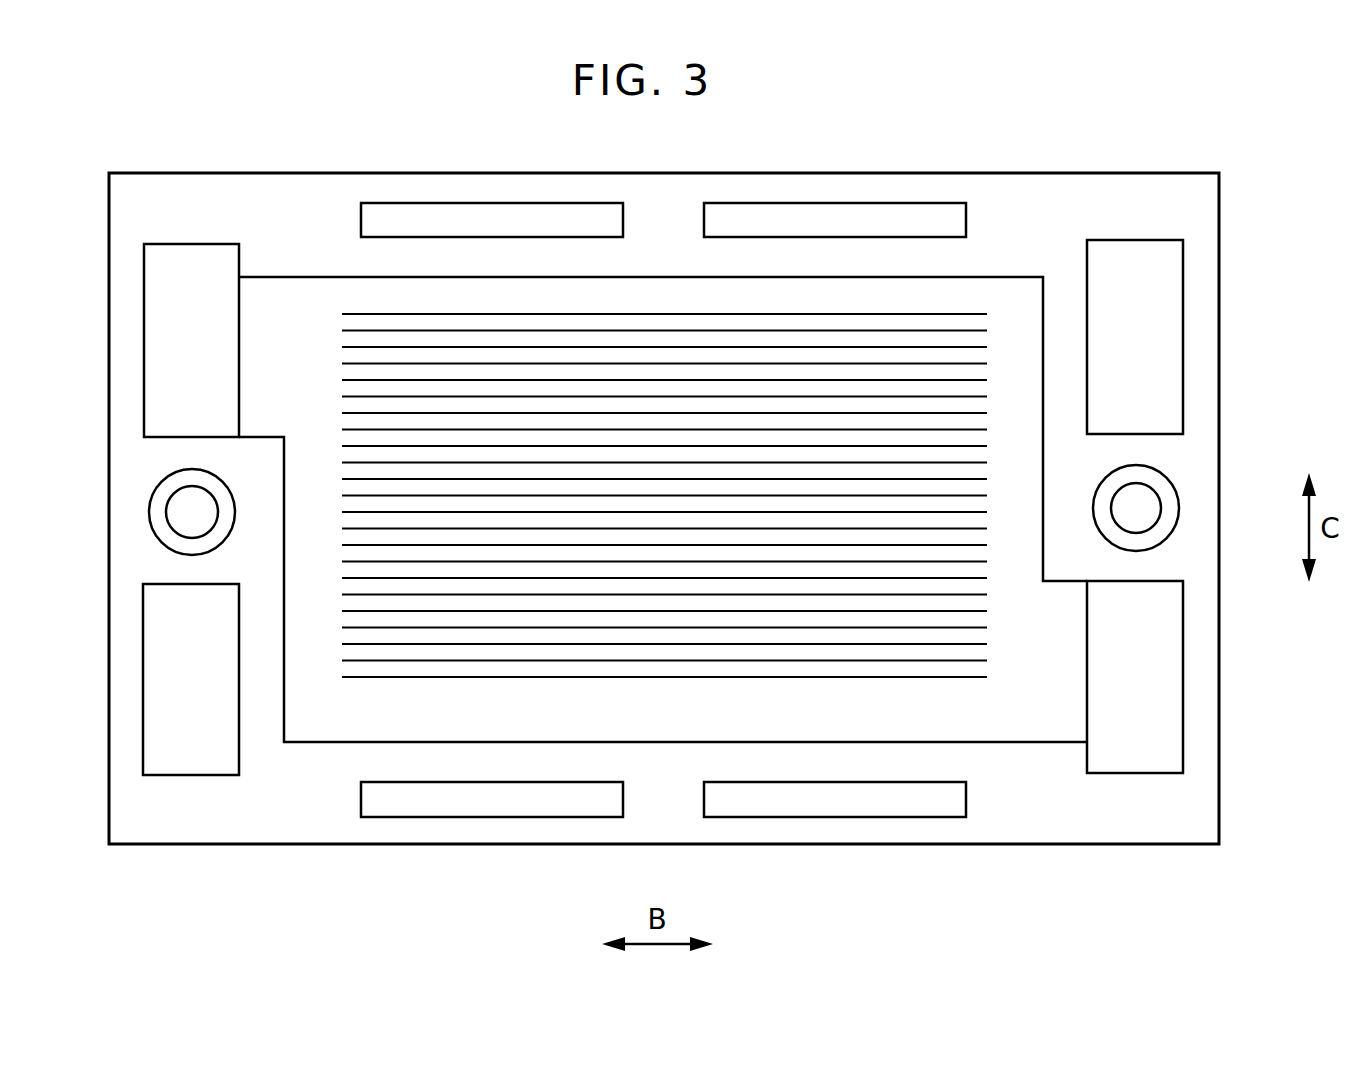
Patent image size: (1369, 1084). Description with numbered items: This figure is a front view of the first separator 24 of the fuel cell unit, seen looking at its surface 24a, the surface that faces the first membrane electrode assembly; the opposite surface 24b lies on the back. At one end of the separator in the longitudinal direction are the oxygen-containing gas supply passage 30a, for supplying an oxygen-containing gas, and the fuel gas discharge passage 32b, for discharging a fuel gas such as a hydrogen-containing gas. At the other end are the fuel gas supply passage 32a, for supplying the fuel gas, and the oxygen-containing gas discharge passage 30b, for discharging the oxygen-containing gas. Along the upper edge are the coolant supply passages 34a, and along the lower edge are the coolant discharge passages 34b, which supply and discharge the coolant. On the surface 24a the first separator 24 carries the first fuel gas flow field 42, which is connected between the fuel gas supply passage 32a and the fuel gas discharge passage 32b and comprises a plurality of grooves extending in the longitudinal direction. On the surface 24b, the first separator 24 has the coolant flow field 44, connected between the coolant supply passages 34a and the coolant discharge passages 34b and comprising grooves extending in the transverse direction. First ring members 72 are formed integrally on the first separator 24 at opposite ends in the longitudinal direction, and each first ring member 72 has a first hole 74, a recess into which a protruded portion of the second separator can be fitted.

The first separator 24 is at (230, 132).
The surface 24a is at (1020, 817).
The surface 24b is at (1094, 814).
The oxygen-containing gas supply passage 30a is at (1135, 337).
The oxygen-containing gas discharge passage 30b is at (191, 679).
The fuel gas supply passage 32a is at (191, 340).
The fuel gas discharge passage 32b is at (1135, 677).
The coolant supply passages 34a is at (663, 220).
The coolant discharge passages 34b is at (663, 799).
The first fuel gas flow field 42 is at (634, 332).
The coolant flow field 44 is at (679, 684).
The first ring members 72 is at (151, 529).
The first hole 74 is at (175, 512).